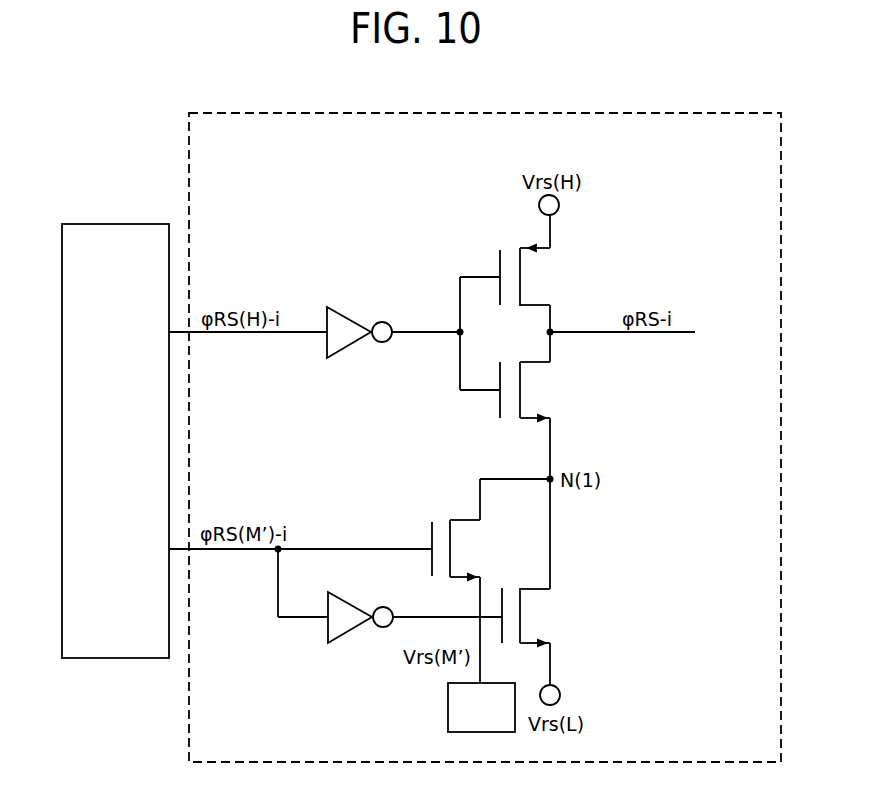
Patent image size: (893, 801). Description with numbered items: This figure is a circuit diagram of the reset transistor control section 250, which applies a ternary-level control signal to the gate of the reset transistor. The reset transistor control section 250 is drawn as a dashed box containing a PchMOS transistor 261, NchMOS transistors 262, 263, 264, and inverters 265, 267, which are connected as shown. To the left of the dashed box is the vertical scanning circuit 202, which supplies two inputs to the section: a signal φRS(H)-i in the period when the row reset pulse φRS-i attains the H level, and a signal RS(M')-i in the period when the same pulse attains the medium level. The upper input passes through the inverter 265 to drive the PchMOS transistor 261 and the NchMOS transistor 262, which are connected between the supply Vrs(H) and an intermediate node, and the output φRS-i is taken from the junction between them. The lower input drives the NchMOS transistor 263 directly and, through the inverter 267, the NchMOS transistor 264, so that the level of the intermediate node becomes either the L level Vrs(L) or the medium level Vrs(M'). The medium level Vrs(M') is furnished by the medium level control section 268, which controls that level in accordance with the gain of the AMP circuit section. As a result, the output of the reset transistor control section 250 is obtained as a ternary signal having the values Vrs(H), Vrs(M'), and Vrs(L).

The vertical scanning circuit 202 is at (112, 223).
The reset transistor control section 250 is at (640, 112).
The PchMOS transistor 261 is at (541, 283).
The NchMOS transistor 262 is at (541, 393).
The NchMOS transistor 263 is at (472, 548).
The NchMOS transistor 264 is at (544, 620).
The inverter 265 is at (347, 348).
The inverter 267 is at (350, 633).
The medium level control section 268 is at (447, 716).